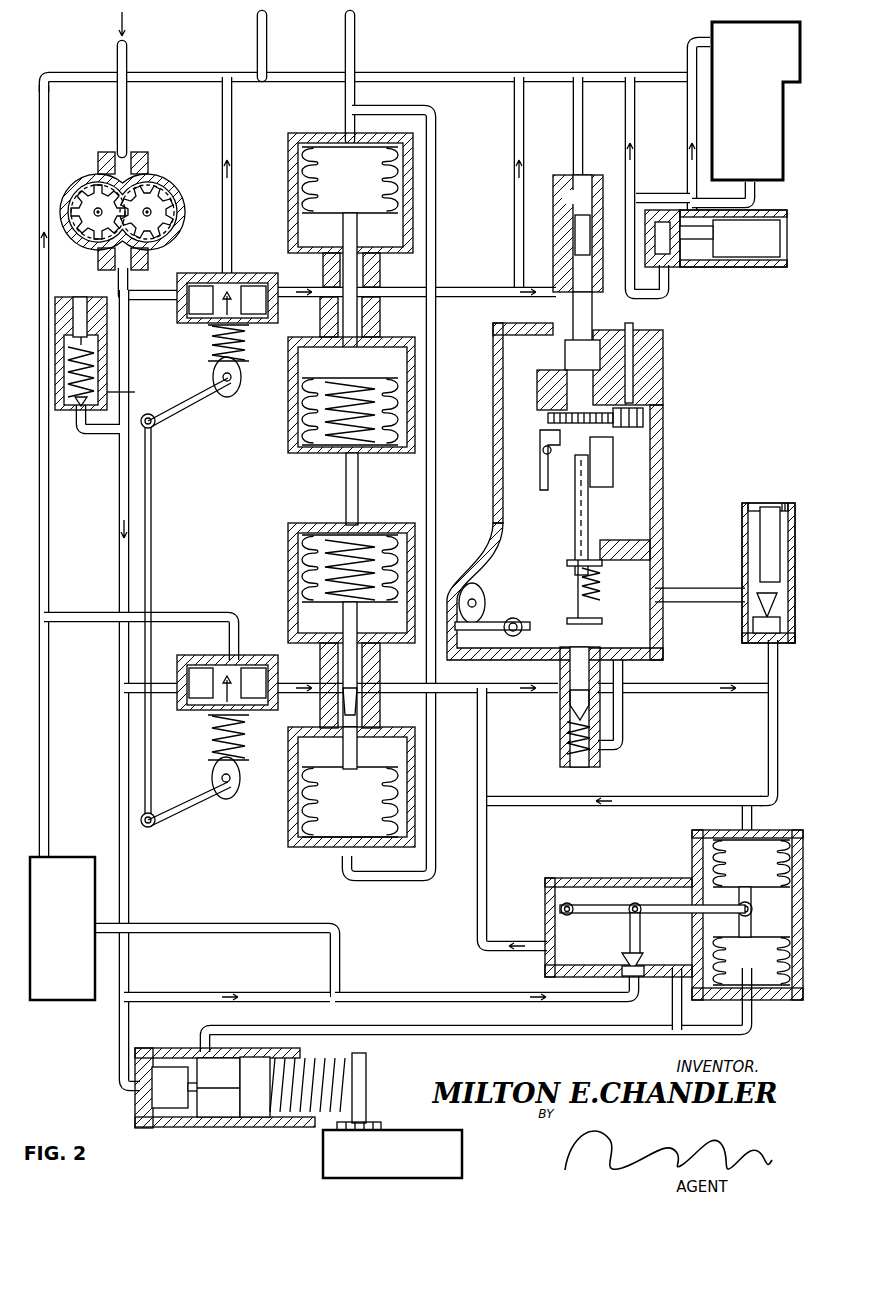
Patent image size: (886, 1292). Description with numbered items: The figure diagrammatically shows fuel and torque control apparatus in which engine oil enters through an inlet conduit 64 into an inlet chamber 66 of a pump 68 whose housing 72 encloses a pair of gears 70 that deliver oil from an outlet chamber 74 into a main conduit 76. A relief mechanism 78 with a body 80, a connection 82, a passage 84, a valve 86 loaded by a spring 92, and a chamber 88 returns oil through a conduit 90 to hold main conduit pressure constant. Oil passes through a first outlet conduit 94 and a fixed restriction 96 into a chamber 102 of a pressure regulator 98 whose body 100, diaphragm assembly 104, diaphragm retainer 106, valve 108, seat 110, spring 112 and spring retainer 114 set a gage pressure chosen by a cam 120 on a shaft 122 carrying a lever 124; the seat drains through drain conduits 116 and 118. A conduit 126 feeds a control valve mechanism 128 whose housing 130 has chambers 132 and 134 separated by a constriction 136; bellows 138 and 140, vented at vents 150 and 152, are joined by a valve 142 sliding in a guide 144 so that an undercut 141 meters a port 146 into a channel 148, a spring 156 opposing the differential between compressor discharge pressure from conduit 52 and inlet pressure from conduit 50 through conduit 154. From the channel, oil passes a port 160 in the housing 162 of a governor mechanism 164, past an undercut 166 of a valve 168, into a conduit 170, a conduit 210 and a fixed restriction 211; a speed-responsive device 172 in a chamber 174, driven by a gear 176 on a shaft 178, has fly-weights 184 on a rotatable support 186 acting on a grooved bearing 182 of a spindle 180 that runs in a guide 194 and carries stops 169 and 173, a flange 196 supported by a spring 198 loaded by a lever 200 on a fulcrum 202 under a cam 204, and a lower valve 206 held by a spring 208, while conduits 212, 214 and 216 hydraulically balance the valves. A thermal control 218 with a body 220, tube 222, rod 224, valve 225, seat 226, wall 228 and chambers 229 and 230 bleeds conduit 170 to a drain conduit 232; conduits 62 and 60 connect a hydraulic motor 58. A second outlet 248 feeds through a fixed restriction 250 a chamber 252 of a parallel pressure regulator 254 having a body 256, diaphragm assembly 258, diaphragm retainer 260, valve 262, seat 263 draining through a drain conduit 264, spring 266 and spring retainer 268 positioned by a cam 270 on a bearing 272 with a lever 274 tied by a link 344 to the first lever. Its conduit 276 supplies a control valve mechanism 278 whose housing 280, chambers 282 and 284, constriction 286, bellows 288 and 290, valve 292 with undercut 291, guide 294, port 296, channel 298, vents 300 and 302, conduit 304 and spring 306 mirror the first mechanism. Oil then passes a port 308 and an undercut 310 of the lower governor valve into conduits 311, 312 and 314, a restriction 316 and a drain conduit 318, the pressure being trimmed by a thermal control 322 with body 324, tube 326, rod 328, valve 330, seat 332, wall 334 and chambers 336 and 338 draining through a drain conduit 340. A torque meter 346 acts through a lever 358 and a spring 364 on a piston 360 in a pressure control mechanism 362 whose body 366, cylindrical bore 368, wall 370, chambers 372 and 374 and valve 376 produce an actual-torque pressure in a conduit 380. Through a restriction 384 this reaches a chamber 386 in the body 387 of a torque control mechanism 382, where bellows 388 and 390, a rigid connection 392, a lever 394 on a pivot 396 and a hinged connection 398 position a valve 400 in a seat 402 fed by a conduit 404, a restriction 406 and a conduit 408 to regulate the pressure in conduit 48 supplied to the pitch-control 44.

The pitch-control 44 is at (48, 852).
The conduit 48 is at (198, 925).
The conduit 50 is at (268, 47).
The conduit 52 is at (356, 47).
The hydraulic motor 58 is at (789, 167).
The conduit 60 is at (688, 48).
The conduit 62 is at (756, 200).
The inlet conduit 64 is at (128, 47).
The inlet chamber 66 is at (99, 206).
The pump 68 is at (135, 204).
The gears 70 is at (160, 210).
The housing 72 is at (174, 180).
The outlet chamber 74 is at (117, 243).
The main conduit 76 is at (118, 520).
The relief mechanism 78 is at (78, 445).
The body 80 is at (60, 296).
The connection 82 is at (87, 434).
The passage 84 is at (80, 436).
The valve 86 is at (132, 395).
The chamber 88 is at (76, 412).
The conduit 90 is at (47, 137).
The spring 92 is at (108, 312).
The first outlet conduit 94 is at (150, 300).
The fixed restriction 96 is at (131, 282).
The pressure regulator 98 is at (192, 270).
The body 100 is at (240, 273).
The chamber 102 is at (200, 300).
The diaphragm assembly 104 is at (206, 336).
The diaphragm retainer 106 is at (188, 328).
The valve 108 is at (253, 300).
The seat 110 is at (266, 275).
The spring 112 is at (210, 345).
The spring retainer 114 is at (208, 358).
The drain conduit 116 is at (222, 113).
The drain conduit 118 is at (184, 72).
The cam 120 is at (201, 388).
The shaft 122 is at (222, 380).
The lever 124 is at (156, 426).
The conduit 126 is at (270, 287).
The control valve mechanism 128 is at (291, 129).
The housing 130 is at (350, 188).
The chamber 132 is at (318, 256).
The chamber 134 is at (350, 395).
The constriction 136 is at (381, 268).
The bellows 138 is at (321, 170).
The bellows 140 is at (349, 431).
The undercut 141 is at (364, 286).
The valve 142 is at (381, 256).
The guide 144 is at (381, 317).
The port 146 is at (320, 312).
The channel 148 is at (436, 290).
The vent 150 is at (284, 130).
The vent 152 is at (339, 401).
The conduit 154 is at (360, 505).
The spring 156 is at (371, 460).
The port 160 is at (576, 442).
The housing 162 is at (664, 381).
The governor mechanism 164 is at (673, 363).
The undercut 166 is at (565, 240).
The valve 168 is at (578, 233).
The stop 169 is at (634, 343).
The conduit 170 is at (636, 295).
The speed-responsive device 172 is at (638, 463).
The stop 173 is at (616, 446).
The chamber 174 is at (534, 390).
The gear 176 is at (646, 418).
The shaft 178 is at (616, 414).
The spindle 180 is at (565, 352).
The grooved bearing 182 is at (548, 462).
The fly-weights 184 is at (546, 490).
The rotatable support 186 is at (540, 450).
The guide 194 is at (590, 523).
The flange 196 is at (603, 564).
The spring 198 is at (603, 586).
The lever 200 is at (603, 621).
The fulcrum 202 is at (520, 620).
The cam 204 is at (483, 592).
The valve 206 is at (596, 650).
The spring 208 is at (565, 753).
The conduit 210 is at (626, 127).
The fixed restriction 211 is at (628, 95).
The conduit 212 is at (574, 137).
The conduit 214 is at (622, 725).
The conduit 216 is at (515, 137).
The thermal control 218 is at (725, 250).
The body 220 is at (670, 292).
The tube 222 is at (770, 268).
The rod 224 is at (746, 239).
The valve 225 is at (715, 268).
The seat 226 is at (666, 195).
The wall 228 is at (735, 212).
The chamber 229 is at (666, 255).
The chamber 230 is at (700, 258).
The drain conduit 232 is at (688, 127).
The second outlet 248 is at (135, 692).
The fixed restriction 250 is at (229, 665).
The chamber 252 is at (200, 683).
The pressure regulator 254 is at (253, 651).
The body 256 is at (206, 661).
The diaphragm assembly 258 is at (247, 721).
The diaphragm retainer 260 is at (208, 722).
The valve 262 is at (253, 683).
The seat 263 is at (256, 664).
The drain conduit 264 is at (196, 612).
The spring 266 is at (210, 745).
The spring retainer 268 is at (210, 761).
The cam 270 is at (245, 785).
The bearing 272 is at (231, 780).
The lever 274 is at (158, 823).
The conduit 276 is at (322, 686).
The control valve mechanism 278 is at (323, 572).
The housing 280 is at (300, 560).
The chamber 282 is at (318, 620).
The chamber 284 is at (351, 787).
The constriction 286 is at (381, 663).
The bellows 288 is at (300, 540).
The bellows 290 is at (322, 800).
The undercut 291 is at (358, 712).
The valve 292 is at (365, 620).
The guide 294 is at (362, 698).
The port 296 is at (322, 700).
The channel 298 is at (445, 694).
The vent 300 is at (297, 606).
The vent 302 is at (290, 757).
The conduit 304 is at (421, 880).
The spring 306 is at (322, 575).
The port 308 is at (568, 700).
The undercut 310 is at (568, 722).
The conduit 311 is at (645, 685).
The conduit 312 is at (778, 727).
The conduit 314 is at (665, 797).
The restriction 316 is at (493, 800).
The drain conduit 318 is at (487, 840).
The thermal control 322 is at (756, 578).
The body 324 is at (801, 683).
The tube 326 is at (745, 537).
The rod 328 is at (765, 516).
The valve 330 is at (757, 636).
The seat 332 is at (757, 605).
The wall 334 is at (752, 580).
The chamber 336 is at (760, 633).
The chamber 338 is at (786, 640).
The drain conduit 340 is at (680, 603).
The link 344 is at (153, 566).
The torque meter 346 is at (313, 1173).
The lever 358 is at (367, 1085).
The piston 360 is at (256, 1120).
The pressure control mechanism 362 is at (268, 1088).
The spring 364 is at (308, 1076).
The body 366 is at (170, 1048).
The cylindrical bore 368 is at (295, 1115).
The wall 370 is at (200, 1040).
The chamber 372 is at (176, 1087).
The chamber 374 is at (218, 1087).
The valve 376 is at (217, 1105).
The conduit 380 is at (412, 1035).
The torque control mechanism 382 is at (714, 908).
The restriction 384 is at (682, 1013).
The chamber 386 is at (645, 940).
The body 387 is at (561, 879).
The bellows 388 is at (722, 860).
The bellows 390 is at (722, 955).
The rigid connection 392 is at (753, 910).
The lever 394 is at (641, 925).
The pivot 396 is at (575, 909).
The hinged connection 398 is at (642, 908).
The valve 400 is at (645, 955).
The seat 402 is at (645, 978).
The conduit 404 is at (176, 995).
The restriction 406 is at (305, 990).
The conduit 408 is at (405, 995).